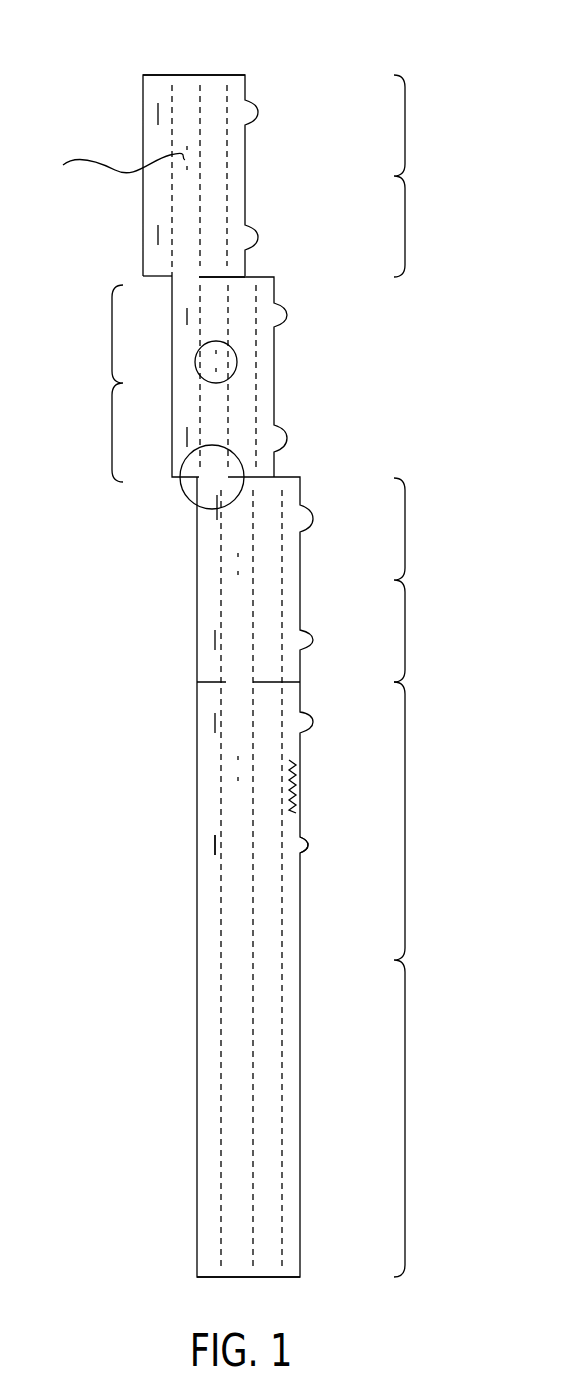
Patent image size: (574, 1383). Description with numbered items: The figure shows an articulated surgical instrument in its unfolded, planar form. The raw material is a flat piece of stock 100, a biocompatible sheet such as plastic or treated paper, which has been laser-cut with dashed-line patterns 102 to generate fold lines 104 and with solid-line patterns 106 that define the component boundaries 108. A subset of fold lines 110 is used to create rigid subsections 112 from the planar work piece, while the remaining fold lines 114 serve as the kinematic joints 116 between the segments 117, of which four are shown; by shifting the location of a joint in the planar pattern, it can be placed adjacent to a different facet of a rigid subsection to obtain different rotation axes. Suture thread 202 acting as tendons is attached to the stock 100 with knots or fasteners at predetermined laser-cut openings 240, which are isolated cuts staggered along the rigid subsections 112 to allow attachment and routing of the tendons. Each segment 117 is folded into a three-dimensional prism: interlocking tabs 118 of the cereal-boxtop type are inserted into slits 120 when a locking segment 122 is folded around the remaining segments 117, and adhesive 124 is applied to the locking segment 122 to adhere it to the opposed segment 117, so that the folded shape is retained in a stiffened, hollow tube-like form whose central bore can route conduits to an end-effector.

The flat piece of stock 100 is at (264, 99).
The dashed-line patterns 102 is at (237, 173).
The fold lines 104 is at (230, 74).
The solid-line patterns 106 is at (235, 280).
The component boundaries 108 is at (127, 276).
The subset of fold lines 110 is at (213, 1282).
The rigid subsections 112 is at (268, 1178).
The remaining fold lines 114 is at (212, 691).
The kinematic joints 116 is at (184, 498).
The segments 117 is at (259, 676).
The interlocking tabs 118 is at (306, 845).
The slits 120 is at (210, 847).
The locking segment 122 is at (292, 1107).
The adhesive 124 is at (294, 778).
The suture thread 202 is at (120, 172).
The laser-cut openings 240 is at (237, 367).